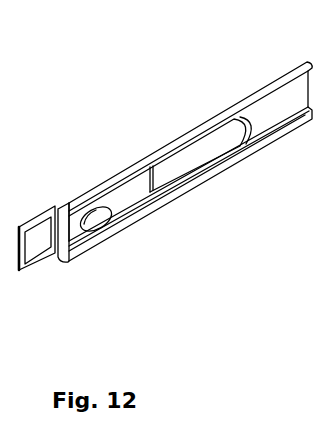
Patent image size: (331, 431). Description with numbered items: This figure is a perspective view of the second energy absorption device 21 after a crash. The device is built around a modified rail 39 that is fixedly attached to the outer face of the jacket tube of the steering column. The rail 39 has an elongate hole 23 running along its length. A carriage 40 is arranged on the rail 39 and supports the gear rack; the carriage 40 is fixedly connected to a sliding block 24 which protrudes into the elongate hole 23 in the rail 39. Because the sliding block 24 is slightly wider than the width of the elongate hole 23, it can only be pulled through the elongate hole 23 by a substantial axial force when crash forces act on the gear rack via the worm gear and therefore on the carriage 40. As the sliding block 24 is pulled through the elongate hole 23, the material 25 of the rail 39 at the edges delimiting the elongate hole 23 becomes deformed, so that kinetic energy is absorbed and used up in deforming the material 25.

The second energy absorption device 21 is at (185, 174).
The elongate hole 23 is at (220, 136).
The sliding block 24 is at (98, 227).
The material 25 is at (166, 160).
The rail 39 is at (267, 118).
The carriage 40 is at (45, 248).